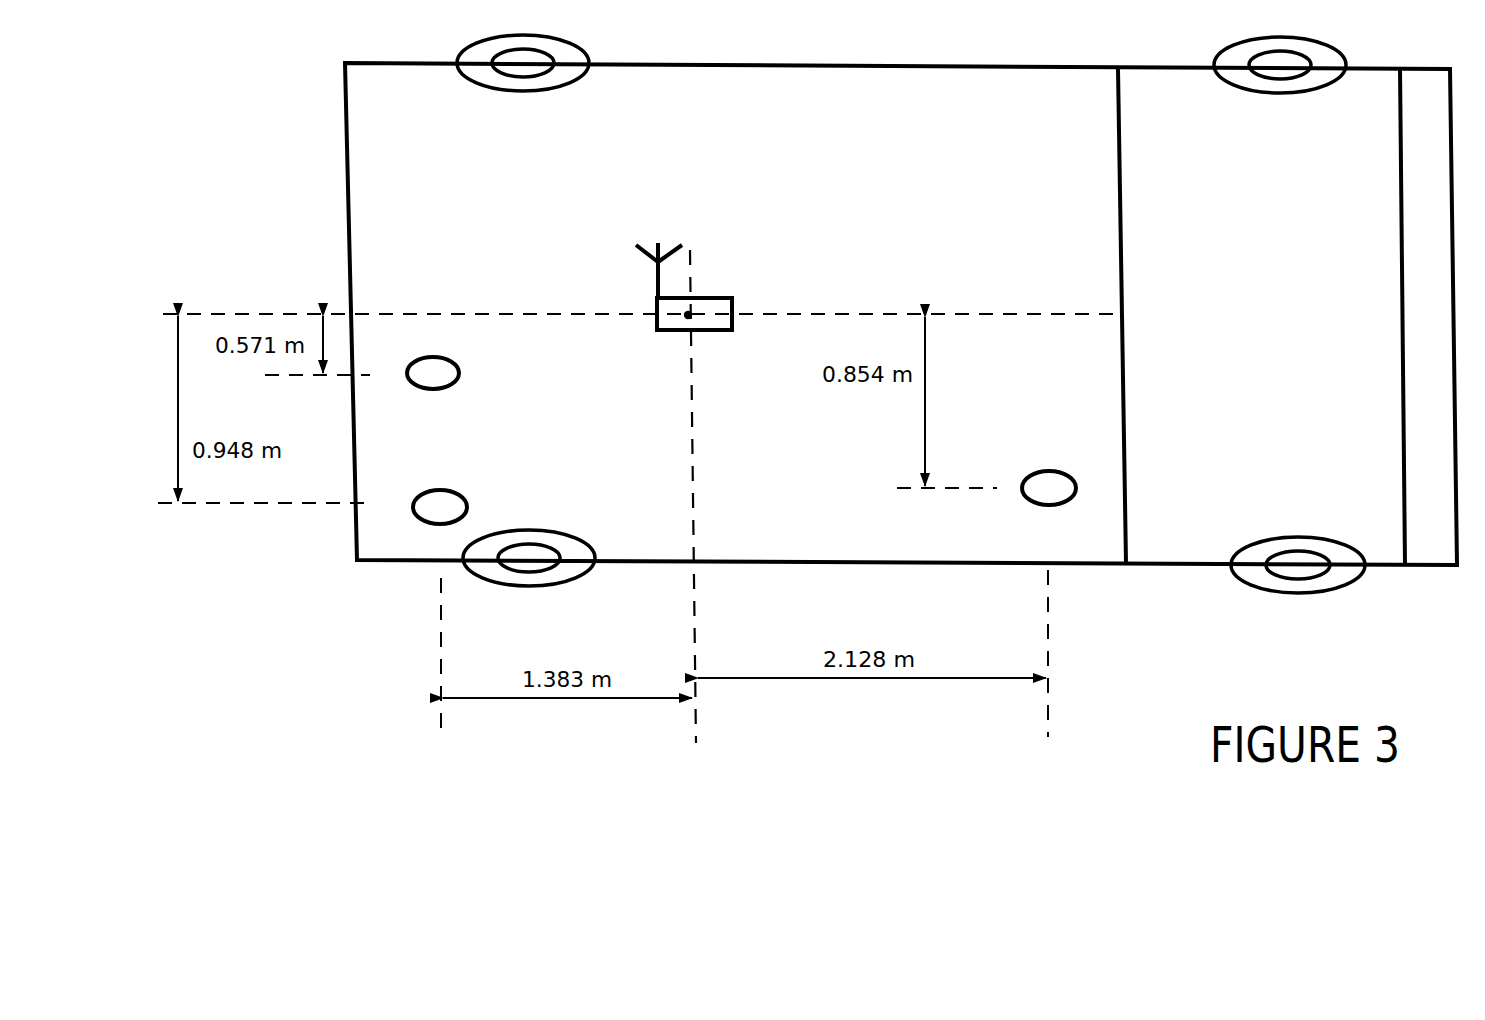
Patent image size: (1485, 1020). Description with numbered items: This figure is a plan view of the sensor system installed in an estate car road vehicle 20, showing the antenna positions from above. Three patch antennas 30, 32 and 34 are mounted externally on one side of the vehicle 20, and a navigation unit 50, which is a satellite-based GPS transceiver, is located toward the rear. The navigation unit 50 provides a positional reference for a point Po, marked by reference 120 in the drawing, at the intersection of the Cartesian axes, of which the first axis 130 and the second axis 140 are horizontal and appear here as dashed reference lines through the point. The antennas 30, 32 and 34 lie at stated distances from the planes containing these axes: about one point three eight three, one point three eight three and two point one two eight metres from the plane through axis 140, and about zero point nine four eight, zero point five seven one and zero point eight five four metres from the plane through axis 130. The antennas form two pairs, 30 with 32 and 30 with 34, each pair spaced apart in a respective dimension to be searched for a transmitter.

The road vehicle 20 is at (1183, 570).
The patch antenna 30 is at (435, 508).
The patch antenna 32 is at (437, 371).
The patch antenna 34 is at (1050, 490).
The navigation unit 50 is at (670, 310).
The reference point Po 120 is at (690, 315).
The Cartesian axis 130 is at (255, 312).
The Cartesian axis 140 is at (700, 591).